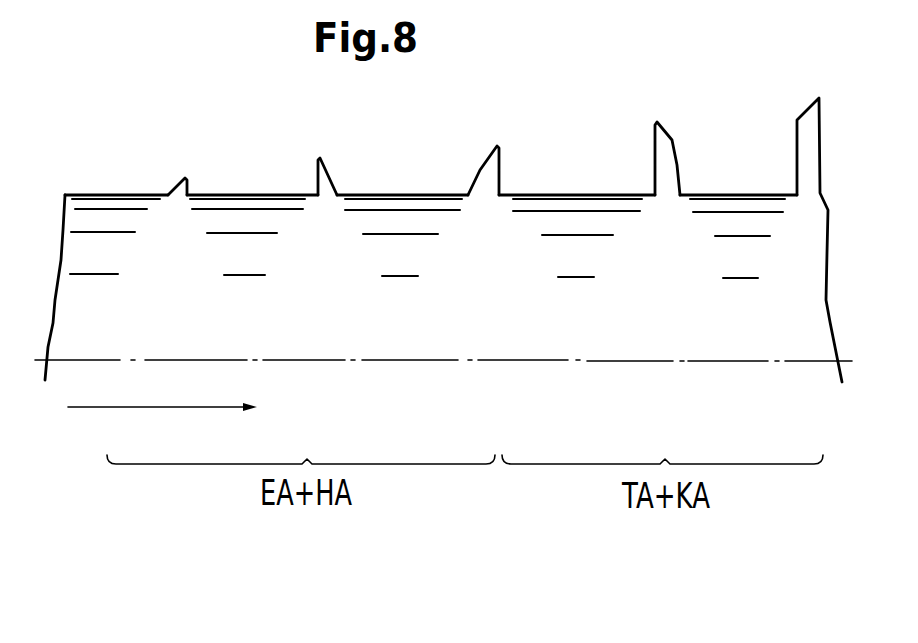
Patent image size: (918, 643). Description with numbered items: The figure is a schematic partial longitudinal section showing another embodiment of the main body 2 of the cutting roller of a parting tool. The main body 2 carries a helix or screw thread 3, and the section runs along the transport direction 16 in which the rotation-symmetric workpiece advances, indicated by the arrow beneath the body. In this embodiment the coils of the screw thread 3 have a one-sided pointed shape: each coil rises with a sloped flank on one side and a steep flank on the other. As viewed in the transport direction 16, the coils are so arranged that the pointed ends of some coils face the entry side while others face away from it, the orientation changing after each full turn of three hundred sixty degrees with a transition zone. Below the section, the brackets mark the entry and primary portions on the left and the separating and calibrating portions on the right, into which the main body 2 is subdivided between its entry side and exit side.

The main body 2 is at (808, 285).
The screw thread 3 is at (182, 182).
The transport direction 16 is at (184, 406).